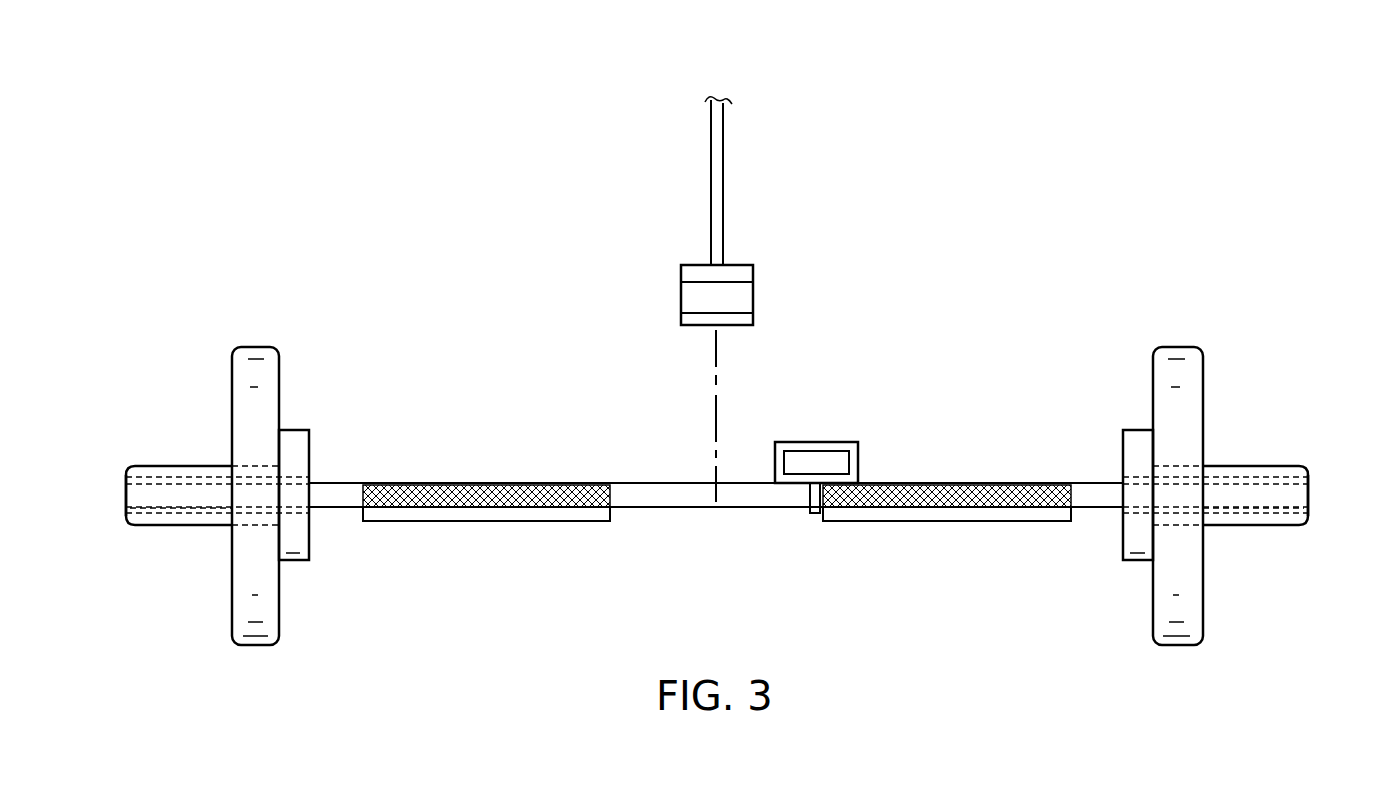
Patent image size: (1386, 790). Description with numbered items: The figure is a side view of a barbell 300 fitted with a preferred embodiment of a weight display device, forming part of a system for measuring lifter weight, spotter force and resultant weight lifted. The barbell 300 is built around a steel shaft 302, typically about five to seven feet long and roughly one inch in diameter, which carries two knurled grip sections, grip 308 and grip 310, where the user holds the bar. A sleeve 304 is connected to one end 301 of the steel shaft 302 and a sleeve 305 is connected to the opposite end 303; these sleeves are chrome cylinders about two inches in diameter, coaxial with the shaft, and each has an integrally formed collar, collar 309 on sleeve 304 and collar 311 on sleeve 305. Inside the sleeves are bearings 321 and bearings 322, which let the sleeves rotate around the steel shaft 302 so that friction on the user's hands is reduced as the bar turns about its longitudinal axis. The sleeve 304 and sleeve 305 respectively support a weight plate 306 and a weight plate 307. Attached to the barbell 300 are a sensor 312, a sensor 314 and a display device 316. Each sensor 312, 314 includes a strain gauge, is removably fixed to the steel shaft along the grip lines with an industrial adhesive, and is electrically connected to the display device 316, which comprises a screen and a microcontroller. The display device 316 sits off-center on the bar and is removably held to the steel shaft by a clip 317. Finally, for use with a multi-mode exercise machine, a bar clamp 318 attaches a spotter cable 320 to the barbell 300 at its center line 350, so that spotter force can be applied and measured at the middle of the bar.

The barbell 300 is at (428, 88).
The end of steel shaft 301 is at (126, 496).
The steel shaft 302 is at (653, 483).
The end of steel shaft 303 is at (1308, 496).
The sleeve 304 is at (165, 466).
The sleeve 305 is at (1268, 466).
The weight plate 306 is at (252, 347).
The weight plate 307 is at (1178, 347).
The grip 308 is at (478, 485).
The collar 309 is at (300, 430).
The grip 310 is at (953, 485).
The collar 311 is at (1132, 430).
The sensor 312 is at (485, 521).
The sensor 314 is at (947, 521).
The display device 316 is at (815, 442).
The clip 317 is at (813, 517).
The bar clamp 318 is at (681, 300).
The spotter cable 320 is at (711, 181).
The bearings 321 is at (165, 513).
The bearings 322 is at (1266, 513).
The center line 350 is at (708, 498).